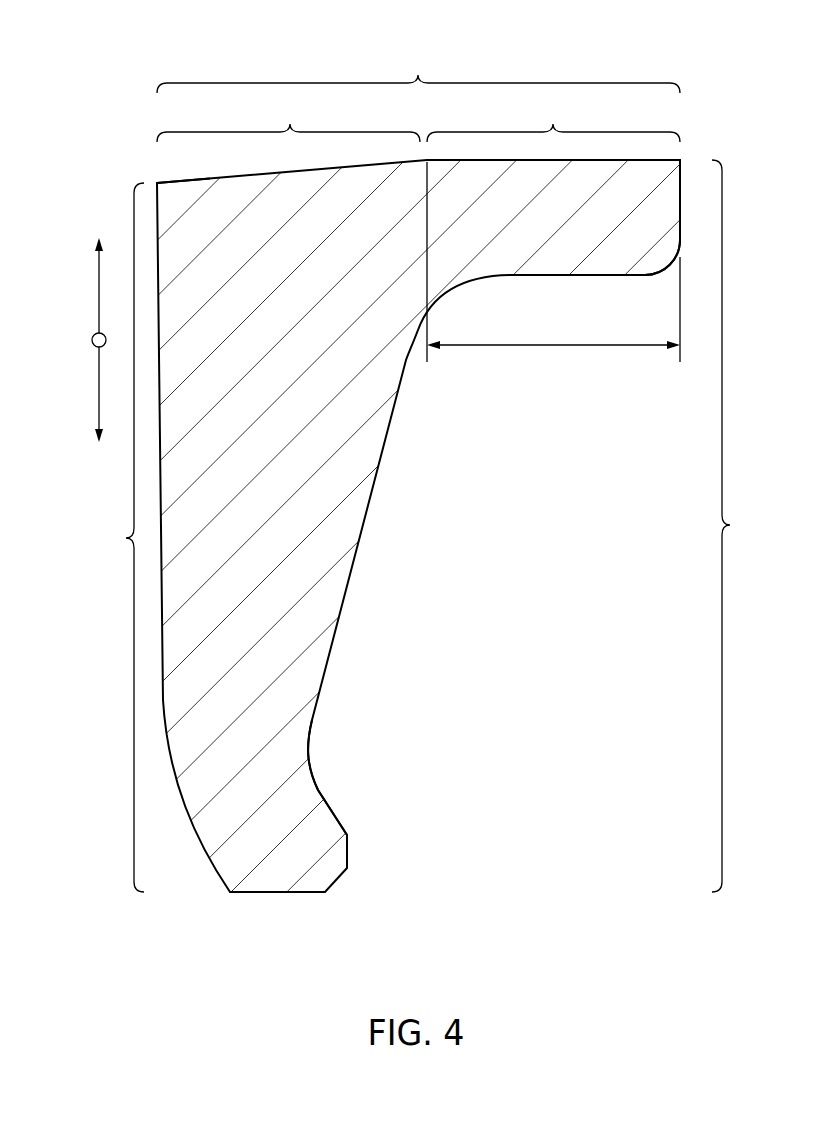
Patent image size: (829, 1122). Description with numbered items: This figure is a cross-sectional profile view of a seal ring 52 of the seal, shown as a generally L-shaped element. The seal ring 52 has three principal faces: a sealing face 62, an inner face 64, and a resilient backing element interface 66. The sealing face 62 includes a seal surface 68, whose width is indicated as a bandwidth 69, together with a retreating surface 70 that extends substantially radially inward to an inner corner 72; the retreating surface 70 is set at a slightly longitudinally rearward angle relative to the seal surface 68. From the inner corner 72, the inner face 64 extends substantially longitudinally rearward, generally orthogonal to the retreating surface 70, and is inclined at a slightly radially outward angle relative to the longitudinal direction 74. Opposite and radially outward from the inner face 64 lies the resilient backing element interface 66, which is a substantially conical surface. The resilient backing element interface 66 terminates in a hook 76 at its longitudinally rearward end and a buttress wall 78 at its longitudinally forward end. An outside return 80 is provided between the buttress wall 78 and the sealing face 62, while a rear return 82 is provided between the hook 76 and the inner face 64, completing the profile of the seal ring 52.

The seal ring 52 is at (640, 55).
The sealing face 62 is at (418, 69).
The inner face 64 is at (121, 537).
The resilient backing element interface 66 is at (736, 526).
The seal surface 68 is at (553, 118).
The bandwidth 69 is at (553, 347).
The retreating surface 70 is at (288, 118).
The inner corner 72 is at (180, 180).
The longitudinal direction 74 is at (92, 340).
The hook 76 is at (324, 797).
The buttress wall 78 is at (573, 276).
The outside return 80 is at (681, 193).
The rear return 82 is at (279, 894).